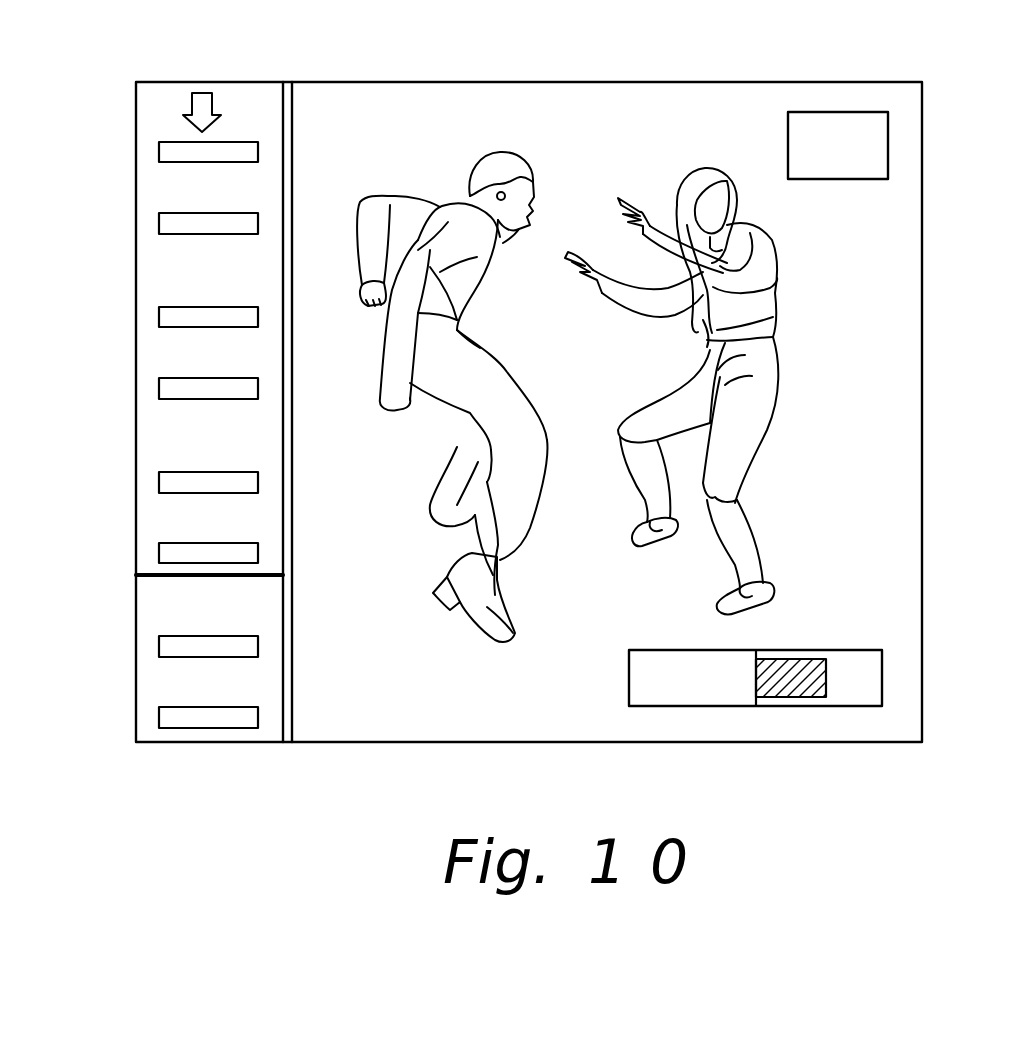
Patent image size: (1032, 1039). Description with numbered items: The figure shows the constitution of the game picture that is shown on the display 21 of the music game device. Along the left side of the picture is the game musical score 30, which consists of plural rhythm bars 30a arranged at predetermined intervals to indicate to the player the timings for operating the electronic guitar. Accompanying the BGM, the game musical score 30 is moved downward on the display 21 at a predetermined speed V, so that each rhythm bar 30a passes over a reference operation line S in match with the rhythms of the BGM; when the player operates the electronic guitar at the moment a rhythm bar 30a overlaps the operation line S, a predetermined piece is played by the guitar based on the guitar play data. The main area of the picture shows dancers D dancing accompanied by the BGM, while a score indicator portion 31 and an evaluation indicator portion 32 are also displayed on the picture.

The display 21 is at (588, 82).
The game musical score 30 is at (152, 435).
The rhythm bar 30a is at (197, 213).
The predetermined speed V is at (212, 101).
The reference operation line S is at (176, 577).
The dancers D is at (507, 362).
The score indicator portion 31 is at (807, 180).
The evaluation indicator portion 32 is at (818, 650).